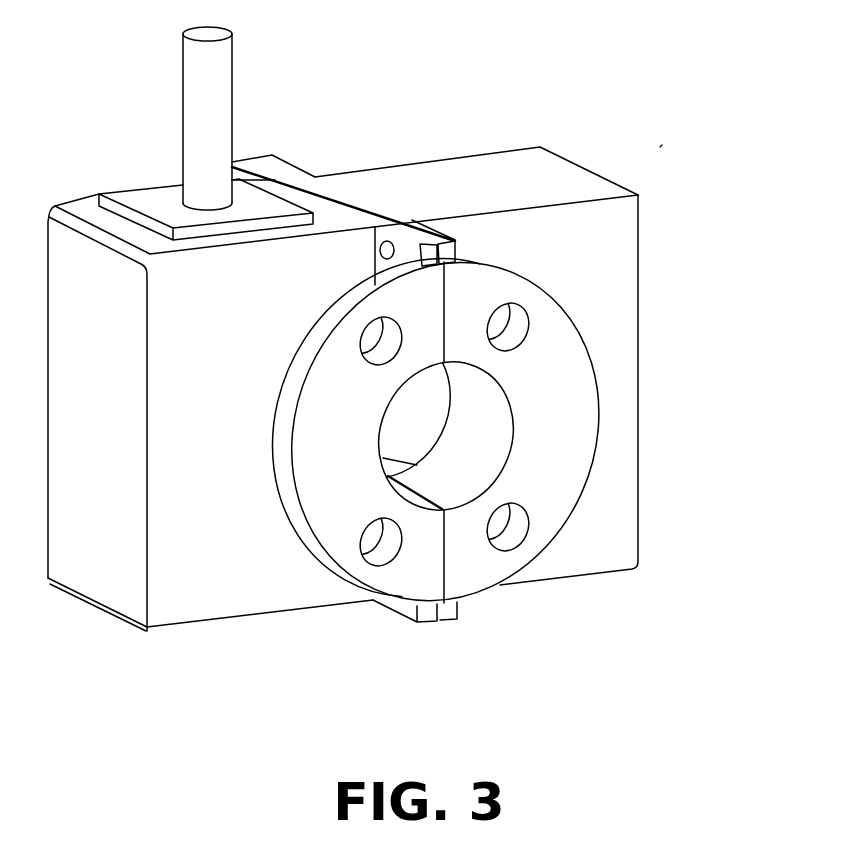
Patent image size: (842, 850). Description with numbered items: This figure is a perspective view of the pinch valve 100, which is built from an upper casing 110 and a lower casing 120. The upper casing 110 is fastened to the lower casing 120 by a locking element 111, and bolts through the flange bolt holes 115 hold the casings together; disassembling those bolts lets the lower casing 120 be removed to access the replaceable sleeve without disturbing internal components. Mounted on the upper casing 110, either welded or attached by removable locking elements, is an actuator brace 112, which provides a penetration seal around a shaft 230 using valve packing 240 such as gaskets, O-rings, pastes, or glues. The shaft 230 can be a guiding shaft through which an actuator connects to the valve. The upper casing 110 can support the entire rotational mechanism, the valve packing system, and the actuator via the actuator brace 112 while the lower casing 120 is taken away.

The pinch valve 100 is at (660, 147).
The upper casing 110 is at (182, 563).
The locking element 111 is at (388, 250).
The actuator brace 112 is at (145, 203).
The flange bolt holes 115 is at (507, 313).
The lower casing 120 is at (607, 533).
The shaft 230 is at (215, 67).
The valve packing 240 is at (182, 205).